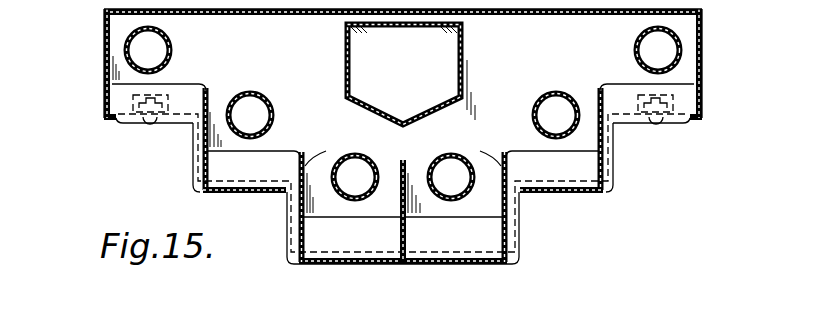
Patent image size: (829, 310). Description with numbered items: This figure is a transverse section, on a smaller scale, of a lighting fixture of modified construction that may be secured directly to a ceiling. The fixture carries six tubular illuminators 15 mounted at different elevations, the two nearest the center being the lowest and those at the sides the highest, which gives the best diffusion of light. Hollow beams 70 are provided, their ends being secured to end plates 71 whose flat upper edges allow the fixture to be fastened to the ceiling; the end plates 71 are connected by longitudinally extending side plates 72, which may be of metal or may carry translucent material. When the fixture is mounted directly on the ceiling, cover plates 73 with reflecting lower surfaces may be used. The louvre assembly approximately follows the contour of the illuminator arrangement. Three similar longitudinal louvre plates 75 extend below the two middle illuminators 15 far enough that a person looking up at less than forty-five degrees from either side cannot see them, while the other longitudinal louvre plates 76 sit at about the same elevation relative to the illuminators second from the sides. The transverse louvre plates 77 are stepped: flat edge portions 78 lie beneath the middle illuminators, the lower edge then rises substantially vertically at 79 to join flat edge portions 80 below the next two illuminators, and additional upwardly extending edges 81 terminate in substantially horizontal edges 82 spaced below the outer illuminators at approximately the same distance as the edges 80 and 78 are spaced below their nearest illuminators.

The tubular illuminators 15 is at (403, 114).
The hollow beams 70 is at (462, 42).
The end plates 71 is at (403, 63).
The side plates 72 is at (104, 58).
The cover plates 73 is at (301, 15).
The longitudinal louvre plates 75 is at (505, 158).
The longitudinal louvre plates 76 is at (208, 96).
The transverse louvre plates 77 is at (549, 168).
The flat edge portions 78 is at (361, 263).
The upwardly extending edges 79 is at (287, 224).
The flat edge portions 80 is at (236, 192).
The upwardly extending edges 81 is at (197, 150).
The horizontal edges 82 is at (135, 124).